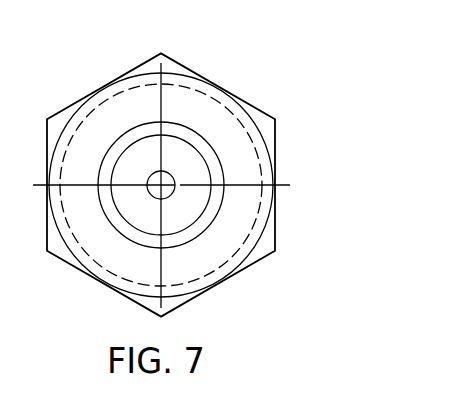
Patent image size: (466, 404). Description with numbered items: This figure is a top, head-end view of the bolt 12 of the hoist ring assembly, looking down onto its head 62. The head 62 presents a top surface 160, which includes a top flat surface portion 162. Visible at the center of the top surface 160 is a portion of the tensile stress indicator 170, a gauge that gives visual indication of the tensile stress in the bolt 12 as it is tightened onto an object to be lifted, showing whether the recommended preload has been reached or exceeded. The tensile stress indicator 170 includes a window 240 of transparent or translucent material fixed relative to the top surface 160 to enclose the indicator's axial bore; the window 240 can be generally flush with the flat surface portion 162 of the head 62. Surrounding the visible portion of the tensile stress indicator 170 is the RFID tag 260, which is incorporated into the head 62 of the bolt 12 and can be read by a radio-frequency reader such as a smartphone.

The bolt 12 is at (300, 147).
The head 62 is at (276, 228).
The top surface 160 is at (80, 140).
The top flat surface portion 162 is at (235, 230).
The tensile stress indicator 170 is at (143, 155).
The window 240 is at (167, 175).
The RFID tag 260 is at (125, 228).